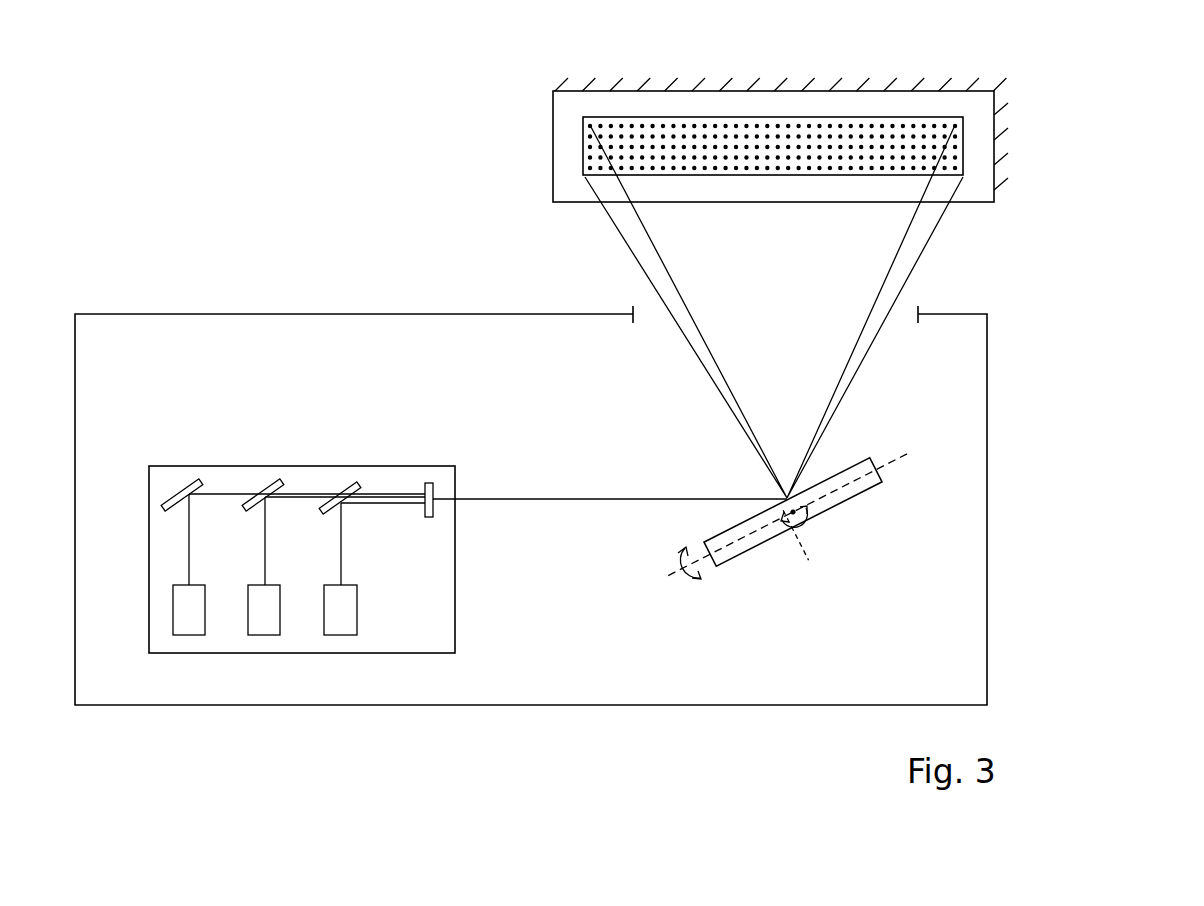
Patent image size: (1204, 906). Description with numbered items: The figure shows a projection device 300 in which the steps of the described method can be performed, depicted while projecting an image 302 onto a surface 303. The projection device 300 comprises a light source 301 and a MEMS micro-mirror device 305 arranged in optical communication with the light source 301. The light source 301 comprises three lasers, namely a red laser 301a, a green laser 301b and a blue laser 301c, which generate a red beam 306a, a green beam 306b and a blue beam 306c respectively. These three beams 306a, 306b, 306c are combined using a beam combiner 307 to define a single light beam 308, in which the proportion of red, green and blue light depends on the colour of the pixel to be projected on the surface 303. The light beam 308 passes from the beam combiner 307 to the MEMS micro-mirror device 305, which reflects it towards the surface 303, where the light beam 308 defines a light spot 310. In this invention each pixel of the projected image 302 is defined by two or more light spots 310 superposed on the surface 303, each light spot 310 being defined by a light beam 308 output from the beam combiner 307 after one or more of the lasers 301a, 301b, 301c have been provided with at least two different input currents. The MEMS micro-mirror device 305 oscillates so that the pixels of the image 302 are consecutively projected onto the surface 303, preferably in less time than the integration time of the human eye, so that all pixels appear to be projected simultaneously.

The projection device 300 is at (1051, 384).
The light source 301 is at (455, 640).
The red laser 301a is at (185, 635).
The green laser 301b is at (270, 635).
The blue laser 301c is at (348, 635).
The image 302 is at (857, 117).
The surface 303 is at (977, 192).
The MEMS micro-mirror device 305 is at (845, 502).
The red beam 306a is at (186, 526).
The green beam 306b is at (263, 525).
The blue beam 306c is at (343, 525).
The beam combiner 307 is at (433, 484).
The light beam 308 is at (529, 499).
The light spot 310 is at (585, 125).